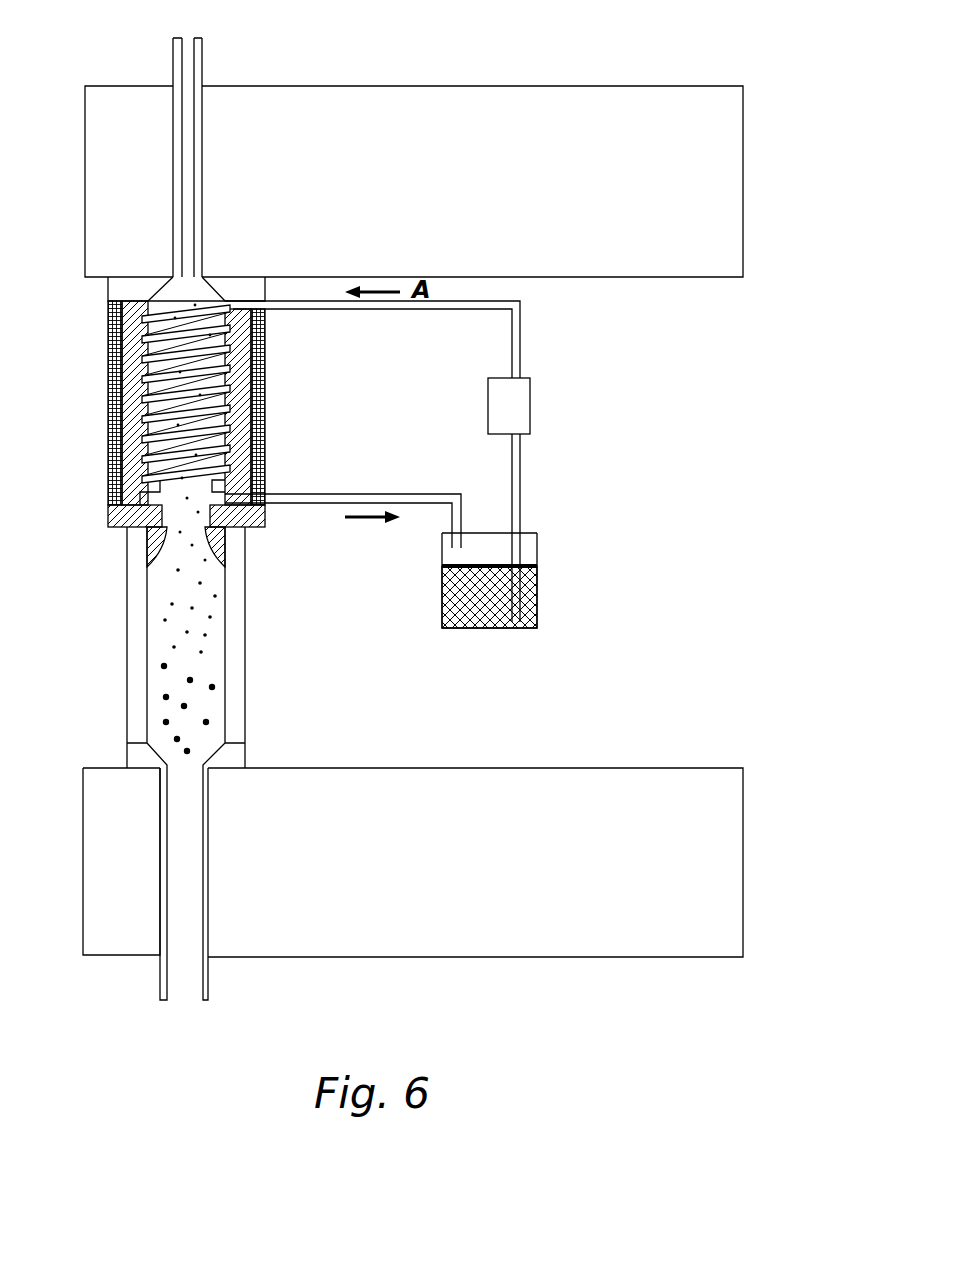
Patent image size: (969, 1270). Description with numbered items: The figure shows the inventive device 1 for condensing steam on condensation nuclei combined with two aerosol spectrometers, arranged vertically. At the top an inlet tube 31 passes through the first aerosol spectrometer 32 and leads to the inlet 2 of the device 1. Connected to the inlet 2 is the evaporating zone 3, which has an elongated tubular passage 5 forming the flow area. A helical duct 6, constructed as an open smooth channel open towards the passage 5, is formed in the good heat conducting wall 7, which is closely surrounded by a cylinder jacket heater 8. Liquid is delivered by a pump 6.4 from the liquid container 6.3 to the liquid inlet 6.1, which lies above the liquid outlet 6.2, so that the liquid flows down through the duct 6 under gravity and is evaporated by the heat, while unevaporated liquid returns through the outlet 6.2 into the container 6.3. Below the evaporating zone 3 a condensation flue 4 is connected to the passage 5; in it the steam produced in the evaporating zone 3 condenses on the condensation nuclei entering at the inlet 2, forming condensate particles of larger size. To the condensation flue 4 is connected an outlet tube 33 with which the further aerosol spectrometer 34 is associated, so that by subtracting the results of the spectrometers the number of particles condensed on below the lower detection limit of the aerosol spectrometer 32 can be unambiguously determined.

The device 1 is at (168, 1034).
The inlet 2 is at (186, 246).
The evaporating zone 3 is at (155, 414).
The condensation flue 4 is at (240, 630).
The passage 5 is at (178, 511).
The duct 6 is at (176, 355).
The wall 7 is at (138, 443).
The heater 8 is at (122, 487).
The liquid inlet 6.1 is at (300, 303).
The liquid outlet 6.2 is at (287, 498).
The liquid container 6.3 is at (470, 622).
The pump 6.4 is at (530, 412).
The inlet tube 31 is at (190, 117).
The first aerosol spectrometer 32 is at (733, 197).
The outlet tube 33 is at (163, 812).
The further aerosol spectrometer 34 is at (738, 887).